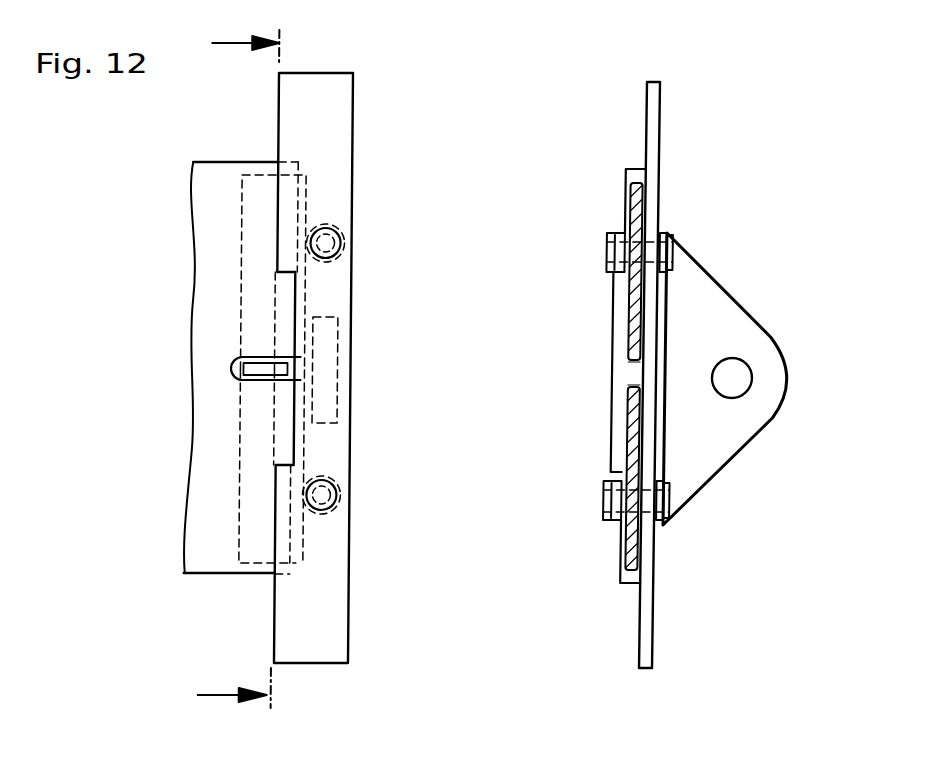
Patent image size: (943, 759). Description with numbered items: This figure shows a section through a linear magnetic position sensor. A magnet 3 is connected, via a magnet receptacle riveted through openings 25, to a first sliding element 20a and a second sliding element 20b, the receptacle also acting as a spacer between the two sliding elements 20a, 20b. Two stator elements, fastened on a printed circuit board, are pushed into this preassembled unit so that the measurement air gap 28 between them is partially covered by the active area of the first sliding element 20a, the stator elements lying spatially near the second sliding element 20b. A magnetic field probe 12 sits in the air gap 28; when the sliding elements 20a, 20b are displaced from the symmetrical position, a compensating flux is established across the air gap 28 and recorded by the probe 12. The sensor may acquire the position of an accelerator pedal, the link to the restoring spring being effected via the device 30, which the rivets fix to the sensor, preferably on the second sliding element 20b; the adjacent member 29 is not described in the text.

The magnet 3 is at (335, 338).
The magnetic field probe 12 is at (238, 369).
The first sliding element 20a is at (621, 428).
The second sliding element 20b is at (647, 108).
The opening 25 is at (331, 249).
The measurement air gap 28 is at (635, 373).
The frame member 29 is at (208, 250).
The device 30 is at (767, 352).